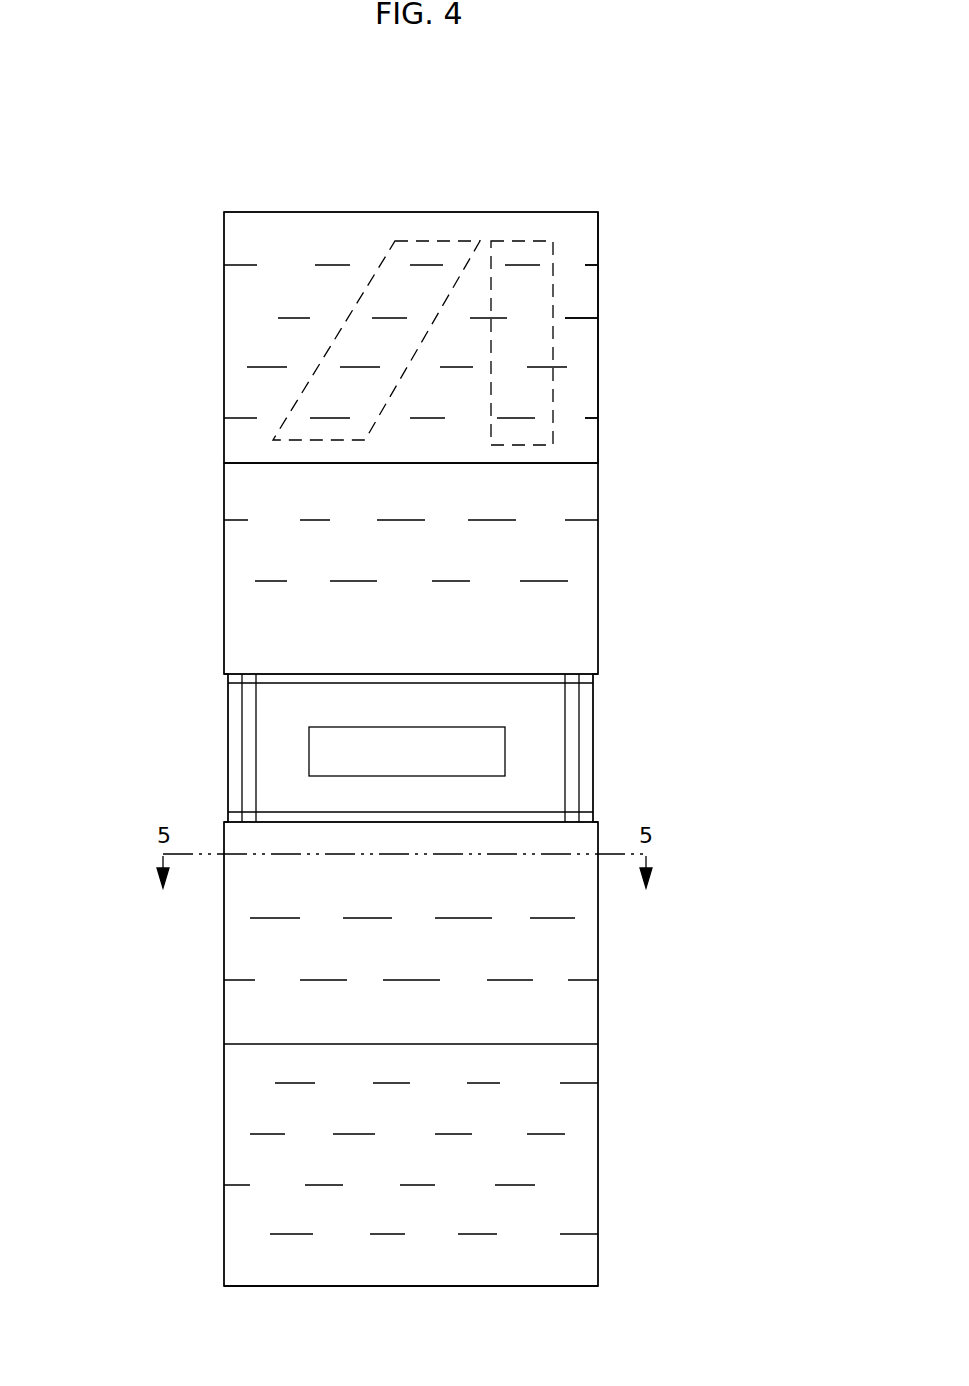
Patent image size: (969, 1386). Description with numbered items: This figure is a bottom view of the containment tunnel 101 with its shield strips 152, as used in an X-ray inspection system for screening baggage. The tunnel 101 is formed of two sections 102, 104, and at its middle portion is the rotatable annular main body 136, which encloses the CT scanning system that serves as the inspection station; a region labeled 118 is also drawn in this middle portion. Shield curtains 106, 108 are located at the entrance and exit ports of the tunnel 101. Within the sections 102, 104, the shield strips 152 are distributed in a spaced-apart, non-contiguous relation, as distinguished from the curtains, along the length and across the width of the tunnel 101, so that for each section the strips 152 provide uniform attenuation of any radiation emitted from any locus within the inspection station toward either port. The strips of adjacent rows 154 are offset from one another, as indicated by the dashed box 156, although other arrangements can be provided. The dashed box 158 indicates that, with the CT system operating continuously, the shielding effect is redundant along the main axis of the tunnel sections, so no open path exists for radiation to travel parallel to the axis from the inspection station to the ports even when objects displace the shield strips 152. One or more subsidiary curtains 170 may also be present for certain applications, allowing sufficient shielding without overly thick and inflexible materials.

The containment tunnel 101 is at (815, 936).
The tunnel section 102 is at (600, 497).
The tunnel section 104 is at (599, 1125).
The shield curtain 106 is at (520, 1286).
The shield curtain 108 is at (378, 214).
The control circuitry (CMOS) region 118 is at (428, 769).
The rotatable annular main body 136 is at (228, 757).
The shield strips 152 is at (383, 270).
The adjacent rows of strips 154 is at (618, 278).
The dashed box showing offset of strips 156 is at (432, 242).
The dashed box showing redundant shielding 158 is at (525, 242).
The subsidiary curtain 170 is at (621, 464).